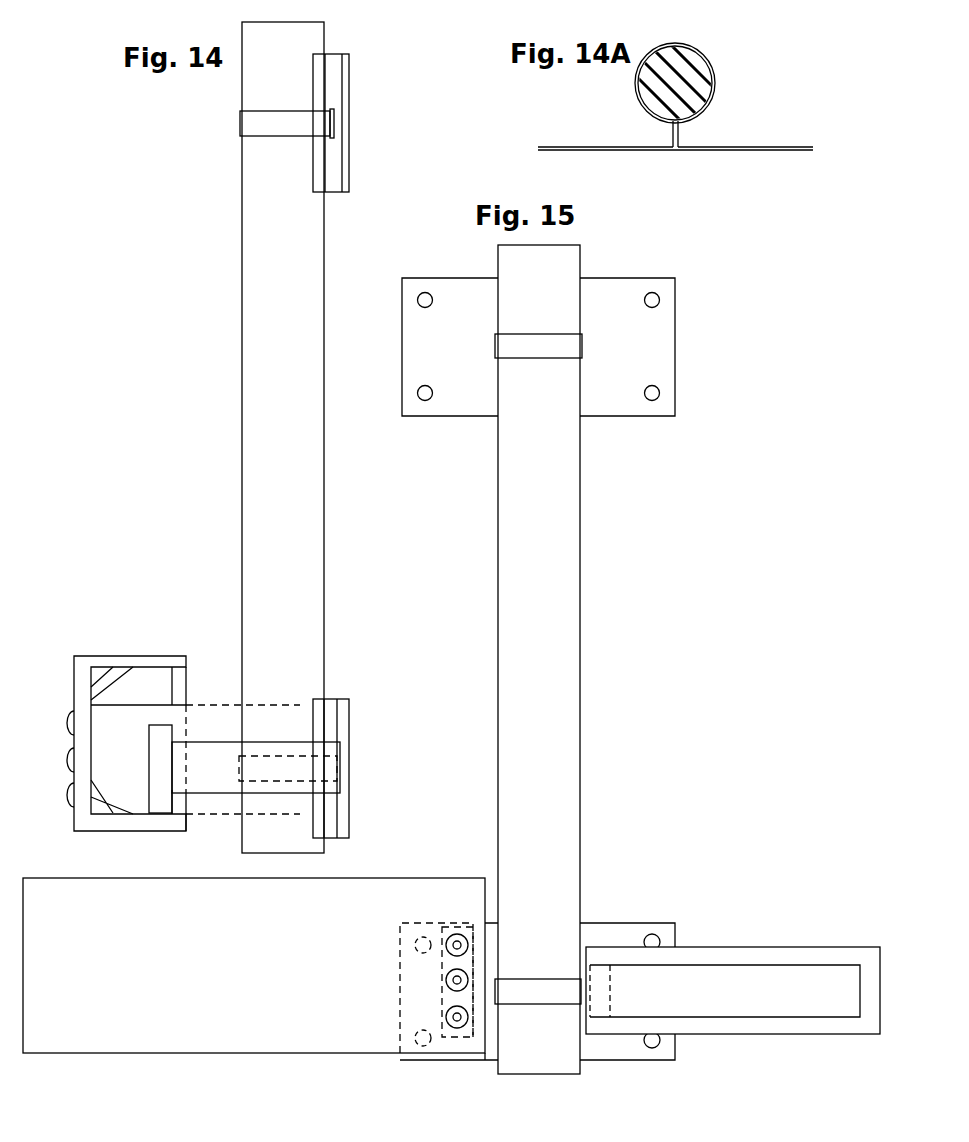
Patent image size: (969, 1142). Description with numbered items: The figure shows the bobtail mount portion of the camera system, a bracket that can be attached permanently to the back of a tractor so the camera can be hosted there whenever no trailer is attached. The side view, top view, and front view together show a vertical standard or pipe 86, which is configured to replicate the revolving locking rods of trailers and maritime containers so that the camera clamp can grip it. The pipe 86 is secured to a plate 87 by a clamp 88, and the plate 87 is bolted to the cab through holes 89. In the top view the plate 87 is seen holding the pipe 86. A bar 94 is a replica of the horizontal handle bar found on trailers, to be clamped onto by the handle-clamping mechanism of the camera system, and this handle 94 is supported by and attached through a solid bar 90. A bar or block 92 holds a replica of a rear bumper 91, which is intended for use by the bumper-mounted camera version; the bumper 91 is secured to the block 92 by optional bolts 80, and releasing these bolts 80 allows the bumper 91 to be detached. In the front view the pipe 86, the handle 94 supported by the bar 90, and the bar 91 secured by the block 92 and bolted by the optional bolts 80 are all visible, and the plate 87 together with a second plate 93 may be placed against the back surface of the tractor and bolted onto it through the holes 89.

In FIG. 14, the optional bolts 80 is at (65, 762).
In FIG. 15, the optional bolts 80 is at (460, 1022).
In FIG. 14, the vertical standard or pipe 86 is at (310, 263).
In FIG. 14A, the vertical standard or pipe 86 is at (698, 83).
In FIG. 15, the vertical standard or pipe 86 is at (565, 582).
In FIG. 14, the plate 87 is at (337, 62).
In FIG. 14A, the plate 87 is at (592, 145).
In FIG. 15, the plate 87 is at (620, 305).
In FIG. 14, the clamp 88 is at (247, 125).
In FIG. 14A, the clamp 88 is at (715, 100).
In FIG. 15, the clamp 88 is at (558, 352).
In FIG. 15, the holes 89 is at (653, 298).
In FIG. 14, the solid bar 90 is at (218, 760).
In FIG. 15, the solid bar 90 is at (600, 978).
In FIG. 14, the rear bumper replica 91 is at (117, 665).
In FIG. 15, the rear bumper replica 91 is at (363, 903).
In FIG. 14, the bar (block) 92 is at (227, 713).
In FIG. 15, the bar (block) 92 is at (467, 928).
In FIG. 15, the plate 93 is at (663, 927).
In FIG. 14, the bar (handle) 94 is at (165, 807).
In FIG. 15, the bar (handle) 94 is at (820, 963).